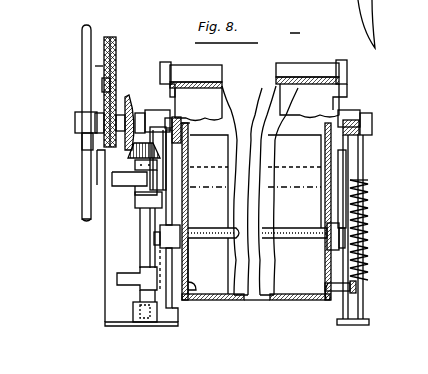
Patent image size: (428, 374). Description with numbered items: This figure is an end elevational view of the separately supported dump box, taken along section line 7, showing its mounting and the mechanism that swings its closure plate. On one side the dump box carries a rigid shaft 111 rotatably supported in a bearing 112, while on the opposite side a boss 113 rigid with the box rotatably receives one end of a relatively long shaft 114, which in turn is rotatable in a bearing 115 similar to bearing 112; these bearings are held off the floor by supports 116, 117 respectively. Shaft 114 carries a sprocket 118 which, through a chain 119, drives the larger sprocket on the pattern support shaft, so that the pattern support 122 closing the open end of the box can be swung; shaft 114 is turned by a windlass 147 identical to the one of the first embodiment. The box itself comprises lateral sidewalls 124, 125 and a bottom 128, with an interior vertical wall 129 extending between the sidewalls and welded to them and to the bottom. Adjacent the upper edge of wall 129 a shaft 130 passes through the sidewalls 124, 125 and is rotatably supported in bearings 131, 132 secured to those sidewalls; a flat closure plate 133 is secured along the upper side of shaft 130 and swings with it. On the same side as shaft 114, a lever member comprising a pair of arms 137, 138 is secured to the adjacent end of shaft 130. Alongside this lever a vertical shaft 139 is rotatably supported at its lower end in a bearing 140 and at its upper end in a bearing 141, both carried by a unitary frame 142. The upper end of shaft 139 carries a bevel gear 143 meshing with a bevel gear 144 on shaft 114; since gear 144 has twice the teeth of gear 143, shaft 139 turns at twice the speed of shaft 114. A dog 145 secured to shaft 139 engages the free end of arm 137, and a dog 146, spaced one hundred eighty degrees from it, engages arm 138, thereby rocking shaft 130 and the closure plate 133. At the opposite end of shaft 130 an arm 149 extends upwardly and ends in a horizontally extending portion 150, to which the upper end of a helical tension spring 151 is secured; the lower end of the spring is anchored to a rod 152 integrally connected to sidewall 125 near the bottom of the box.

The windlass 147 is at (76, 33).
The section line 7- 7 is at (92, 66).
The sprocket 118 is at (106, 143).
The chain 119 is at (113, 58).
The shaft 114 is at (118, 105).
The bevel gear 144 is at (134, 100).
The bearing 115 is at (160, 109).
The boss 113 is at (179, 120).
The bevel gear 143 is at (134, 154).
The bearing 141 is at (125, 178).
The dog 145 is at (140, 207).
The arm 137 is at (152, 214).
The shaft 139 is at (148, 238).
The frame 142 is at (105, 234).
The arm 138 is at (176, 251).
The dog 146 is at (124, 282).
The bearing 140 is at (135, 316).
The support 116 is at (178, 316).
The pattern support 122 is at (233, 69).
The closure plate 133 is at (222, 160).
The shaft 130 is at (223, 228).
The bearing 131 is at (190, 297).
The sidewall 124 is at (190, 294).
The interior vertical wall 129 is at (254, 291).
The bottom 128 is at (281, 297).
The shaft 111 is at (378, 110).
The bearing 112 is at (368, 113).
The support 117 is at (343, 320).
The horizontally extending portion 150 is at (343, 188).
The arm 149 is at (338, 199).
The helical tension spring 151 is at (366, 252).
The bearing 132 is at (326, 254).
The sidewall 125 is at (329, 291).
The rod 152 is at (342, 306).